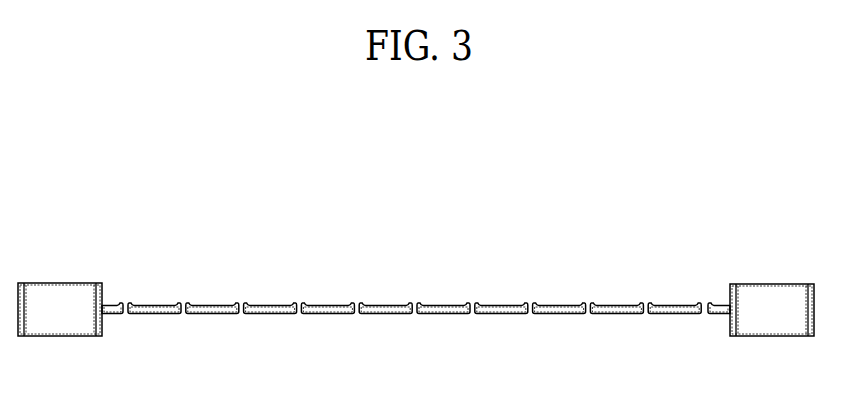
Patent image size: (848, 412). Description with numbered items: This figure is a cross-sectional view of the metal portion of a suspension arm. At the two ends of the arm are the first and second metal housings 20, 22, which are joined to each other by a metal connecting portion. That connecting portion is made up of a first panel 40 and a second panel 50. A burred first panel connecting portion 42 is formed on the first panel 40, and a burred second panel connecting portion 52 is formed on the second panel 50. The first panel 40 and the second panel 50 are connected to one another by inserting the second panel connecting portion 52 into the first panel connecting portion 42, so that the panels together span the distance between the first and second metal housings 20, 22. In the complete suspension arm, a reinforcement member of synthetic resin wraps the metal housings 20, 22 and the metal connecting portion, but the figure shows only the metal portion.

The first metal housing 20 is at (98, 283).
The second metal housing 22 is at (733, 336).
The first panel 40 is at (159, 304).
The first panel connecting portion 42 is at (191, 304).
The second panel 50 is at (272, 314).
The second panel connecting portion 52 is at (355, 314).